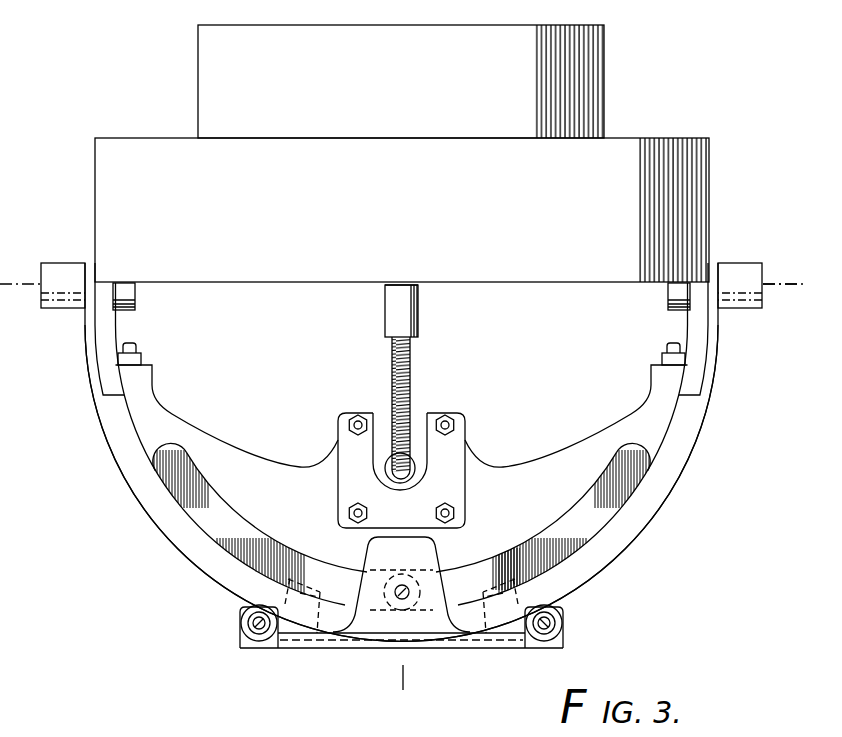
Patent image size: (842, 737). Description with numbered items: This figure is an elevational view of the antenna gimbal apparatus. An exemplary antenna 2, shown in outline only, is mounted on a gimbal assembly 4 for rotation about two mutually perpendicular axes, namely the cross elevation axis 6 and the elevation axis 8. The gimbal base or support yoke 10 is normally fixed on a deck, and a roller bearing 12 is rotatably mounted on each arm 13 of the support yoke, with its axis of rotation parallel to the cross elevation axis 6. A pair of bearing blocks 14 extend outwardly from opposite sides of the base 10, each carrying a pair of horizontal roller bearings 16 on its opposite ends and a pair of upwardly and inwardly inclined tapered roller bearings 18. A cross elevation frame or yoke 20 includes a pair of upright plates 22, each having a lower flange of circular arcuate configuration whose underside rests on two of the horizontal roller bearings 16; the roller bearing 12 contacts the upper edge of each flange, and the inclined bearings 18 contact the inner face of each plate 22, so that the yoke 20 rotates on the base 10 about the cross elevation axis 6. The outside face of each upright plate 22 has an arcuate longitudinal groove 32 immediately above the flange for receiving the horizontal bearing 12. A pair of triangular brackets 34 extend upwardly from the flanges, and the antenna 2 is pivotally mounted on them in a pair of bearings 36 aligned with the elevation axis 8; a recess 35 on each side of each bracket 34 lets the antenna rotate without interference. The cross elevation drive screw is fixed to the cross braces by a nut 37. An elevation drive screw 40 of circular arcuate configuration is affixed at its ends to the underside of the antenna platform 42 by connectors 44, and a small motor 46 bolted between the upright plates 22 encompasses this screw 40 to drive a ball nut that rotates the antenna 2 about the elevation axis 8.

The antenna 2 is at (198, 62).
The antenna platform 42 is at (510, 284).
The bearings 36 is at (61, 266).
The elevation axis 8 is at (780, 286).
The triangular brackets 34 is at (88, 336).
The cross elevation frame or yoke 20 is at (704, 438).
The recess 35 is at (112, 330).
The upright plates 22 is at (555, 452).
The nut 37 is at (142, 356).
The arcuate longitudinal groove 32 is at (604, 464).
The arm 13 is at (372, 544).
The roller bearing 12 is at (368, 590).
The tapered roller bearings 18 is at (292, 579).
The gimbal base or support yoke 10 is at (312, 650).
The bearing blocks 14 is at (240, 637).
The horizontal roller bearings 16 is at (240, 620).
The motor 46 is at (380, 414).
The elevation drive screw 40 is at (393, 354).
The connectors 44 is at (385, 311).
The cross elevation axis 6 is at (401, 284).
The gimbal assembly 4 is at (409, 391).